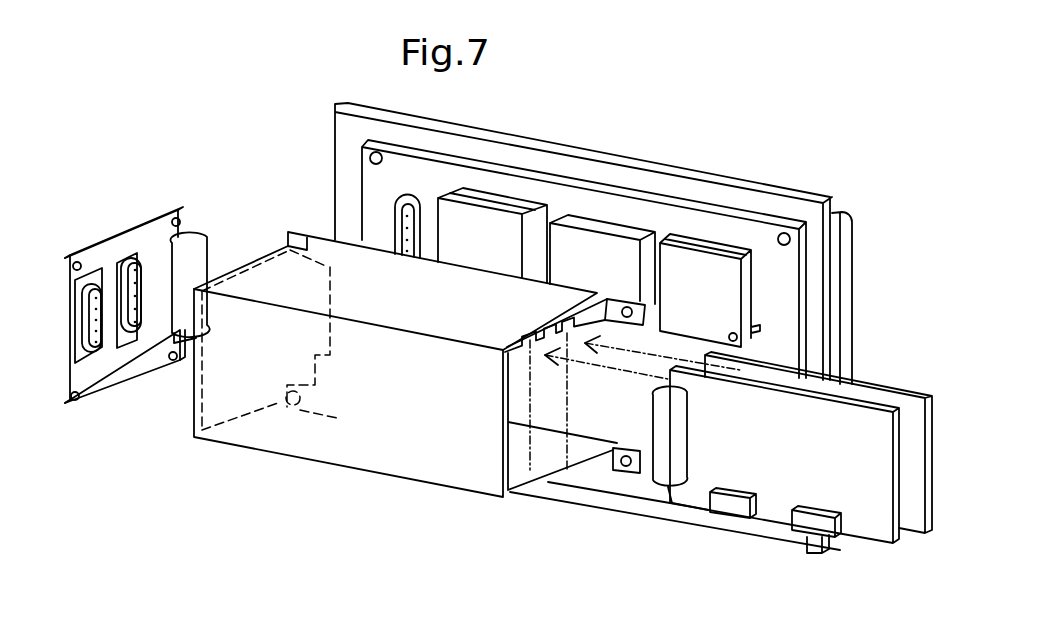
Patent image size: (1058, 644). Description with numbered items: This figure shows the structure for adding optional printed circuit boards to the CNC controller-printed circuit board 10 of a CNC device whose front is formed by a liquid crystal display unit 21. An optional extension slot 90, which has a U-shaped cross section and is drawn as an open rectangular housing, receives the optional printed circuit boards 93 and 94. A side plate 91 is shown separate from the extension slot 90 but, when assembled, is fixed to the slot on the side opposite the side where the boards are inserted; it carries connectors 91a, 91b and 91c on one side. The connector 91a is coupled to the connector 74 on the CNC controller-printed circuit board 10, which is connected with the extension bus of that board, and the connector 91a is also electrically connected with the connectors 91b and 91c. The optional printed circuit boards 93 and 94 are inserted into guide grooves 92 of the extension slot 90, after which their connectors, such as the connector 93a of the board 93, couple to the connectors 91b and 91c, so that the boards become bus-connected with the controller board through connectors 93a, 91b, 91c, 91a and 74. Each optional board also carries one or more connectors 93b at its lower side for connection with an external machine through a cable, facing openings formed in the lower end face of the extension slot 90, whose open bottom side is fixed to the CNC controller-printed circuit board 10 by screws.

The CNC controller-printed circuit board 10 is at (533, 187).
The liquid crystal display unit 21 is at (846, 228).
The connector 74 is at (395, 215).
The optional extension slot 90 is at (281, 436).
The side plate 91 is at (131, 246).
The connector 91a is at (200, 250).
The connector 91b is at (105, 350).
The connector 91c is at (141, 318).
The guide grooves 92 is at (537, 345).
The optional printed circuit board 93 is at (876, 508).
The connector 93a is at (650, 477).
The connectors 93b is at (722, 518).
The optional printed circuit board 94 is at (918, 517).